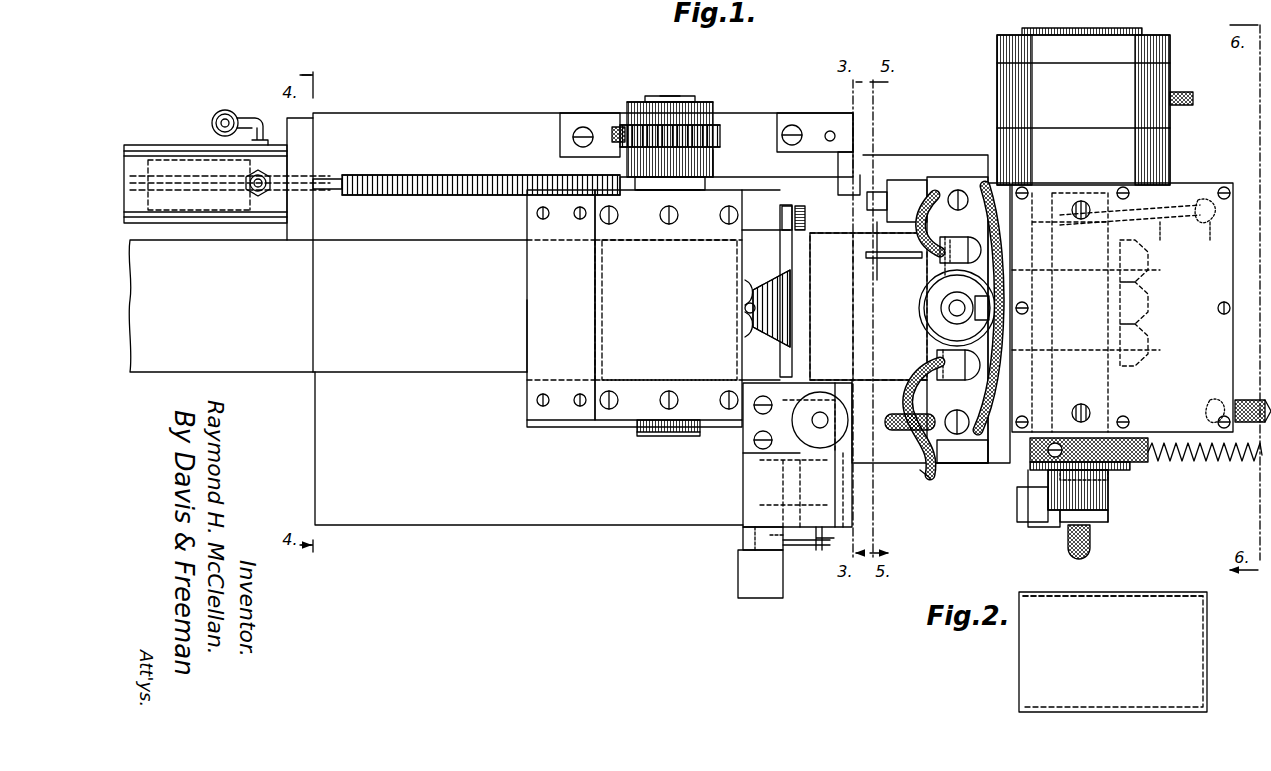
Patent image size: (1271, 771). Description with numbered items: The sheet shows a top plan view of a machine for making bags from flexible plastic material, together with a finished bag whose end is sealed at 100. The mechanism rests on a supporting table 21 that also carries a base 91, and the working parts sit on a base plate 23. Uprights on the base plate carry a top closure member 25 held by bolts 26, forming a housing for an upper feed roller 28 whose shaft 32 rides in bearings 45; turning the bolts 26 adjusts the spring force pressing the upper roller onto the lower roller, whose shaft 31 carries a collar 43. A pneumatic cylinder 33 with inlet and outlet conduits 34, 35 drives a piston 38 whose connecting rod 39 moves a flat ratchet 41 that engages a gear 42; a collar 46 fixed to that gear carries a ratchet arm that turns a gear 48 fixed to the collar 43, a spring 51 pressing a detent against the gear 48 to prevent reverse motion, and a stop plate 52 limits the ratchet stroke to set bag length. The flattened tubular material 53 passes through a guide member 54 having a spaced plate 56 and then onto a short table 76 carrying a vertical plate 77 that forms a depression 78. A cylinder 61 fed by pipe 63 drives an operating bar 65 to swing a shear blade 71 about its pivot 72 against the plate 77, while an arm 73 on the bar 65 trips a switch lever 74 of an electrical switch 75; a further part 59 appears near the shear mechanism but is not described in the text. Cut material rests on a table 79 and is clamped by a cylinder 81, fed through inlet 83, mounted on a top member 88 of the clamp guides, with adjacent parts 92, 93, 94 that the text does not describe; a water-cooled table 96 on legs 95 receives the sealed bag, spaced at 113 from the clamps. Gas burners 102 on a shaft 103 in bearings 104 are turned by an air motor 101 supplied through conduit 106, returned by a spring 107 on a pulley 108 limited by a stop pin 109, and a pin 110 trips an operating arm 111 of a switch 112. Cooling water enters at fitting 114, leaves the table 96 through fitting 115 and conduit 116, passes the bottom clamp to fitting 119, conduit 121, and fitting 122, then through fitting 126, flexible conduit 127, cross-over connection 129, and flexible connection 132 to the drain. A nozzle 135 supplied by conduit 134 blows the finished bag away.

In FIG. 1, the supporting table 21 is at (888, 466).
In FIG. 1, the base plate 23 is at (376, 515).
In FIG. 1, the top closure member 25 is at (642, 319).
In FIG. 1, the bolts 26 is at (722, 222).
In FIG. 1, the upper feed roller 28 is at (592, 345).
In FIG. 1, the shaft 31 is at (672, 96).
In FIG. 1, the shaft 32 is at (683, 192).
In FIG. 1, the pneumatic cylinder 33 is at (165, 145).
In FIG. 1, the inlet conduit 34 is at (232, 110).
In FIG. 1, the outlet conduit 35 is at (246, 181).
In FIG. 1, the piston 38 is at (172, 165).
In FIG. 1, the connecting rod 39 is at (328, 178).
In FIG. 1, the flat ratchet 41 is at (430, 177).
In FIG. 1, the toothed member or gear 42 is at (708, 180).
In FIG. 1, the collar 43 is at (645, 96).
In FIG. 1, the bearings 45 is at (665, 198).
In FIG. 1, the collar 46 is at (713, 160).
In FIG. 1, the gear 48 is at (722, 130).
In FIG. 1, the spring 51 is at (614, 128).
In FIG. 1, the stop plate 52 is at (795, 125).
In FIG. 1, the material 53 is at (362, 318).
In FIG. 2, the material 53 is at (1107, 600).
In FIG. 1, the guide member 54 is at (532, 228).
In FIG. 1, the plate 56 is at (527, 343).
In FIG. 1, the bracket 59 is at (745, 518).
In FIG. 1, the cylinder 61 is at (798, 433).
In FIG. 1, the pipe 63 is at (812, 423).
In FIG. 1, the operating bar 65 is at (852, 388).
In FIG. 1, the shear blade 71 is at (805, 226).
In FIG. 1, the pivot 72 is at (825, 490).
In FIG. 1, the arm 73 is at (819, 552).
In FIG. 1, the switch lever 74 is at (793, 547).
In FIG. 1, the electrical switch 75 is at (754, 585).
In FIG. 1, the table 76 is at (780, 233).
In FIG. 1, the vertical plate 77 is at (782, 222).
In FIG. 1, the depression 78 is at (790, 240).
In FIG. 1, the table 79 is at (820, 304).
In FIG. 1, the cylinder 81 is at (940, 325).
In FIG. 1, the inlet 83 is at (950, 305).
In FIG. 1, the top member 88 is at (940, 177).
In FIG. 1, the base 91 is at (999, 323).
In FIG. 1, the bar 92 is at (866, 257).
In FIG. 1, the rod 93 is at (877, 235).
In FIG. 1, the block 94 is at (900, 195).
In FIG. 1, the upright leg members 95 is at (1150, 212).
In FIG. 1, the table 96 is at (1065, 327).
In FIG. 2, the sealed end 100 is at (1207, 642).
In FIG. 1, the air operated motor 101 is at (1068, 110).
In FIG. 1, the gas burners 102 is at (1158, 320).
In FIG. 1, the shaft 103 is at (1052, 300).
In FIG. 1, the bearings 104 is at (1062, 232).
In FIG. 1, the flexible conduit 106 is at (1180, 92).
In FIG. 1, the spring 107 is at (1200, 455).
In FIG. 1, the pulley 108 is at (1150, 455).
In FIG. 1, the stop pin 109 is at (1030, 478).
In FIG. 1, the pin 110 is at (1078, 496).
In FIG. 1, the operating arm 111 is at (1110, 480).
In FIG. 1, the switch 112 is at (1017, 510).
In FIG. 1, the space 113 is at (1079, 542).
In FIG. 1, the conduit and fitting 114 is at (1258, 400).
In FIG. 1, the fitting 115 is at (1220, 239).
In FIG. 1, the flexible conduit 116 is at (1179, 239).
In FIG. 1, the fitting 119 is at (962, 437).
In FIG. 1, the flexible conduit 121 is at (935, 478).
In FIG. 1, the fitting 122 is at (937, 355).
In FIG. 1, the fitting 126 is at (945, 265).
In FIG. 1, the flexible conduit 127 is at (936, 243).
In FIG. 1, the cross-over flexible connection 129 is at (998, 325).
In FIG. 1, the flexible connection 132 is at (905, 430).
In FIG. 1, the conduit 134 is at (745, 308).
In FIG. 1, the nozzle 135 is at (755, 320).